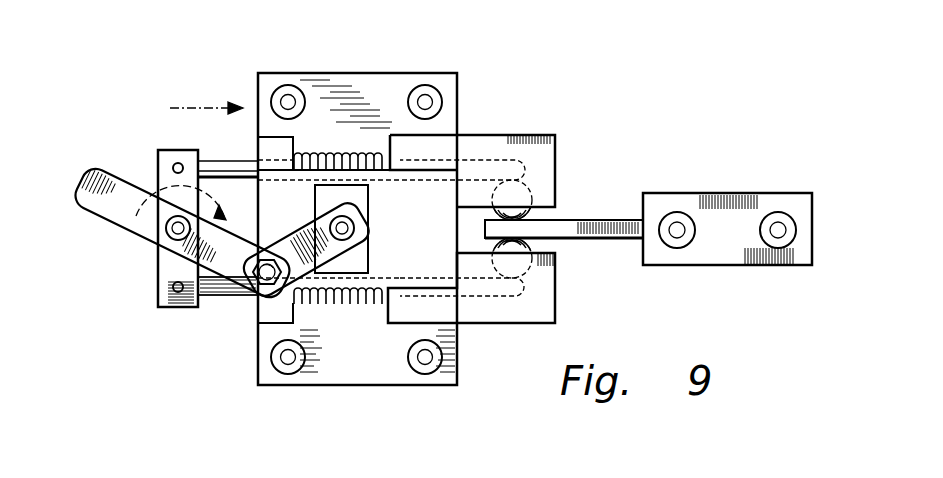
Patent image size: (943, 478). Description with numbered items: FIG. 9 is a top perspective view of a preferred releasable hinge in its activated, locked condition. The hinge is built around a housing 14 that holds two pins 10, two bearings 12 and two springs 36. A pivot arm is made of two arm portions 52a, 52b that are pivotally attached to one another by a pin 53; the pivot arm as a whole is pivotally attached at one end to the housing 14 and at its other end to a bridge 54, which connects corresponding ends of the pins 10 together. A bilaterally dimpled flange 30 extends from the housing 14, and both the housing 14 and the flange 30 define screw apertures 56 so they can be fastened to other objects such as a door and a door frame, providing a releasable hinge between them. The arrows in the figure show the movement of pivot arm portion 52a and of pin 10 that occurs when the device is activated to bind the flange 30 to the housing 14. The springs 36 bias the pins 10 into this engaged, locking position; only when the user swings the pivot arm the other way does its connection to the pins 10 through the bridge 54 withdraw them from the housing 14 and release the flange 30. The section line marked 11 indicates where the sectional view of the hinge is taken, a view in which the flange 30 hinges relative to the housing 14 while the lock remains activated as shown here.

The pin 10 is at (220, 167).
The section line 11- 11 is at (472, 292).
The bearing 12 is at (526, 210).
The housing 14 is at (540, 156).
The bilaterally dimpled flange 30 is at (622, 228).
The spring 36 is at (350, 158).
The pivot arm portion 52a is at (112, 205).
The pivot arm portion 52b is at (263, 312).
The pin 53 is at (266, 266).
The bridge 54 is at (170, 268).
The screw aperture 56 is at (290, 102).